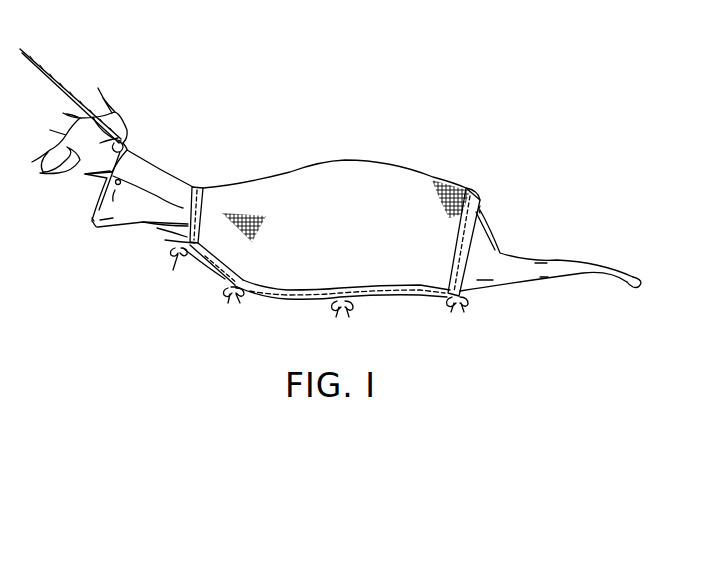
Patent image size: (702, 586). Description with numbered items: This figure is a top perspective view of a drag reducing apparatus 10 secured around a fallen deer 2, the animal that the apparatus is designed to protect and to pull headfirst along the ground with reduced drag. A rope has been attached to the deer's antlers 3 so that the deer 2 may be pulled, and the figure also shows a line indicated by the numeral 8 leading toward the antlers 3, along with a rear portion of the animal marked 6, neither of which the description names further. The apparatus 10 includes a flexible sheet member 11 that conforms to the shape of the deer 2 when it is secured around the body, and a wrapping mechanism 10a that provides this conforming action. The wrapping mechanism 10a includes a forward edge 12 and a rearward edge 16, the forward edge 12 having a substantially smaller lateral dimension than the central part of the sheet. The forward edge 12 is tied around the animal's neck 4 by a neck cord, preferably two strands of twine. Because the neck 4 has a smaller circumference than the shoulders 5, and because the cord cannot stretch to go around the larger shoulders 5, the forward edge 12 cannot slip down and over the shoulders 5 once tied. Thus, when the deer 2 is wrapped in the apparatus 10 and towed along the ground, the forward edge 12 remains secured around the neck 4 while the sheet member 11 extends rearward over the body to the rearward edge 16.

The deer 2 is at (148, 167).
The antlers 3 is at (107, 100).
The neck 4 is at (185, 186).
The shoulders 5 is at (248, 193).
The rear leg 6 is at (553, 254).
The drag rope 8 is at (86, 112).
The drag reducing apparatus 10 is at (330, 131).
The wrapping mechanism 10a is at (434, 178).
The flexible sheet member 11 is at (387, 178).
The forward edge 12 is at (180, 227).
The rearward edge 16 is at (481, 206).